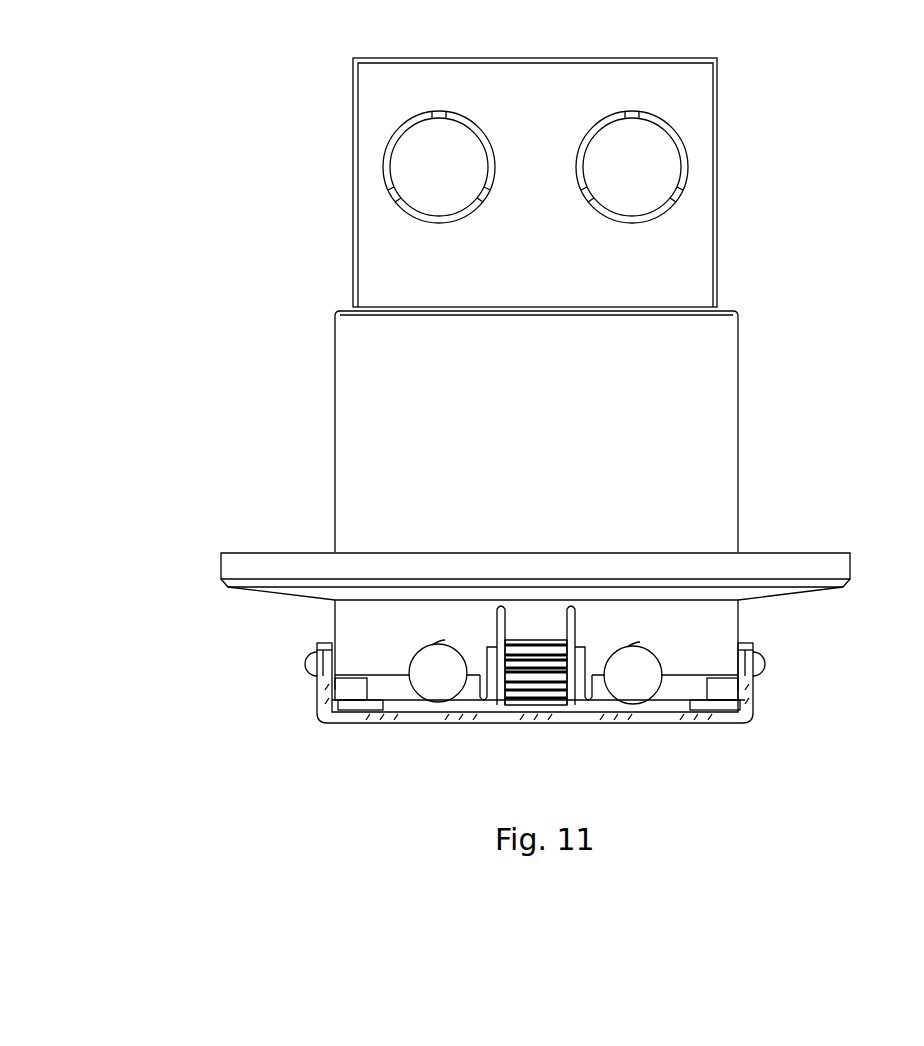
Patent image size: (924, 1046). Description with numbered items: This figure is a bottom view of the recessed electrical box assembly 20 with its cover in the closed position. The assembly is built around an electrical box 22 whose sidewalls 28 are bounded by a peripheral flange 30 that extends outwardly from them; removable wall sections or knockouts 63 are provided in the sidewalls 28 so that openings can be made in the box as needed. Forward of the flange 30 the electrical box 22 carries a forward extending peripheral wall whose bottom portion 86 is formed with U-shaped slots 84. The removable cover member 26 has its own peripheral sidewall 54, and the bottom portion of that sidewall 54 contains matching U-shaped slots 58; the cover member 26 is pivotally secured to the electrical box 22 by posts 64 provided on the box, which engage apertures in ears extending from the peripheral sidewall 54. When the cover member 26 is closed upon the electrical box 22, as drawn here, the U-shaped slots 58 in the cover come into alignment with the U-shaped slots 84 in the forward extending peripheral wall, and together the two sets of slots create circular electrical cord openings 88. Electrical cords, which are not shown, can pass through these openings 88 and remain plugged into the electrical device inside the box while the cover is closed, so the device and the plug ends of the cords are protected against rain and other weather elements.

The recessed electrical box assembly 20 is at (206, 110).
The electrical box 22 is at (717, 82).
The knockouts 63 is at (453, 172).
The sidewalls 28 is at (559, 432).
The peripheral flange 30 is at (240, 566).
The bottom portion 86 is at (396, 642).
The cover member 26 is at (390, 715).
The peripheral sidewall 54 is at (745, 697).
The posts 64 is at (765, 667).
The U-shaped slots 58 is at (622, 708).
The circular electrical cord openings 88 is at (440, 678).
The U-shaped slots 84 is at (436, 645).